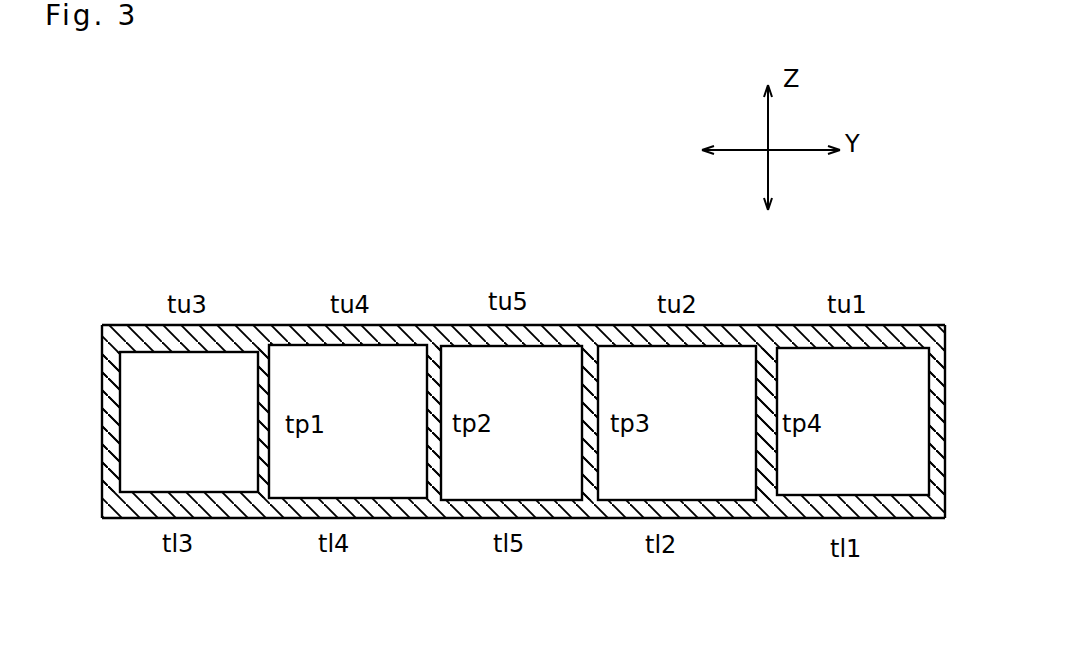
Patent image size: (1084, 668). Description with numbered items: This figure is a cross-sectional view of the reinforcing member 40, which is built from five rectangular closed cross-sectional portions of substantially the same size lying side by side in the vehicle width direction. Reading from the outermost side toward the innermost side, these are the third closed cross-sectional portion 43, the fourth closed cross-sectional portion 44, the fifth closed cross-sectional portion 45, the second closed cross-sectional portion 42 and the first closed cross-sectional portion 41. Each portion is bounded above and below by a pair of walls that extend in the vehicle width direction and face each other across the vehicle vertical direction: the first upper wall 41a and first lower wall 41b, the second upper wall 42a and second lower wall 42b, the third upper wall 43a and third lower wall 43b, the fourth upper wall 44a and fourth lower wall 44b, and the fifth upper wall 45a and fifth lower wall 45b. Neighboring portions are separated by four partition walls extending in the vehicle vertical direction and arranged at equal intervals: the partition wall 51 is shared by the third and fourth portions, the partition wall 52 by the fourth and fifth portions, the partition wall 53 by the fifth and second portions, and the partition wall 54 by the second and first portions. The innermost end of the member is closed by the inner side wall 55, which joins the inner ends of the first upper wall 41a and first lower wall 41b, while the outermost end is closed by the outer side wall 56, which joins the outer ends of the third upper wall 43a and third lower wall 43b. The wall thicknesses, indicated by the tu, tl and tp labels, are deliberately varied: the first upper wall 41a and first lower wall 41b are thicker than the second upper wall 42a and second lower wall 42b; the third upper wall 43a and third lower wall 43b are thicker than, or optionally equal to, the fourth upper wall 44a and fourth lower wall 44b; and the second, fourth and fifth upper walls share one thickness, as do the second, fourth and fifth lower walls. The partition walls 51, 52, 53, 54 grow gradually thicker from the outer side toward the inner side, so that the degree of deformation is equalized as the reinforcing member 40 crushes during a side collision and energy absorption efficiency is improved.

The reinforcing member 40 is at (290, 247).
The first closed cross-sectional portion 41 is at (905, 437).
The second closed cross-sectional portion 42 is at (725, 438).
The third closed cross-sectional portion 43 is at (205, 437).
The fourth closed cross-sectional portion 44 is at (398, 437).
The fifth closed cross-sectional portion 45 is at (562, 437).
The first upper wall 41a is at (897, 325).
The first lower wall 41b is at (900, 518).
The second upper wall 42a is at (722, 325).
The second lower wall 42b is at (723, 518).
The third upper wall 43a is at (232, 325).
The third lower wall 43b is at (233, 518).
The fourth upper wall 44a is at (405, 325).
The fourth lower wall 44b is at (397, 518).
The fifth upper wall 45a is at (560, 325).
The fifth lower wall 45b is at (562, 518).
The partition wall 51 is at (269, 478).
The partition wall 52 is at (441, 485).
The partition wall 53 is at (598, 487).
The partition wall 54 is at (777, 482).
The inner side wall 55 is at (929, 380).
The outer side wall 56 is at (120, 375).